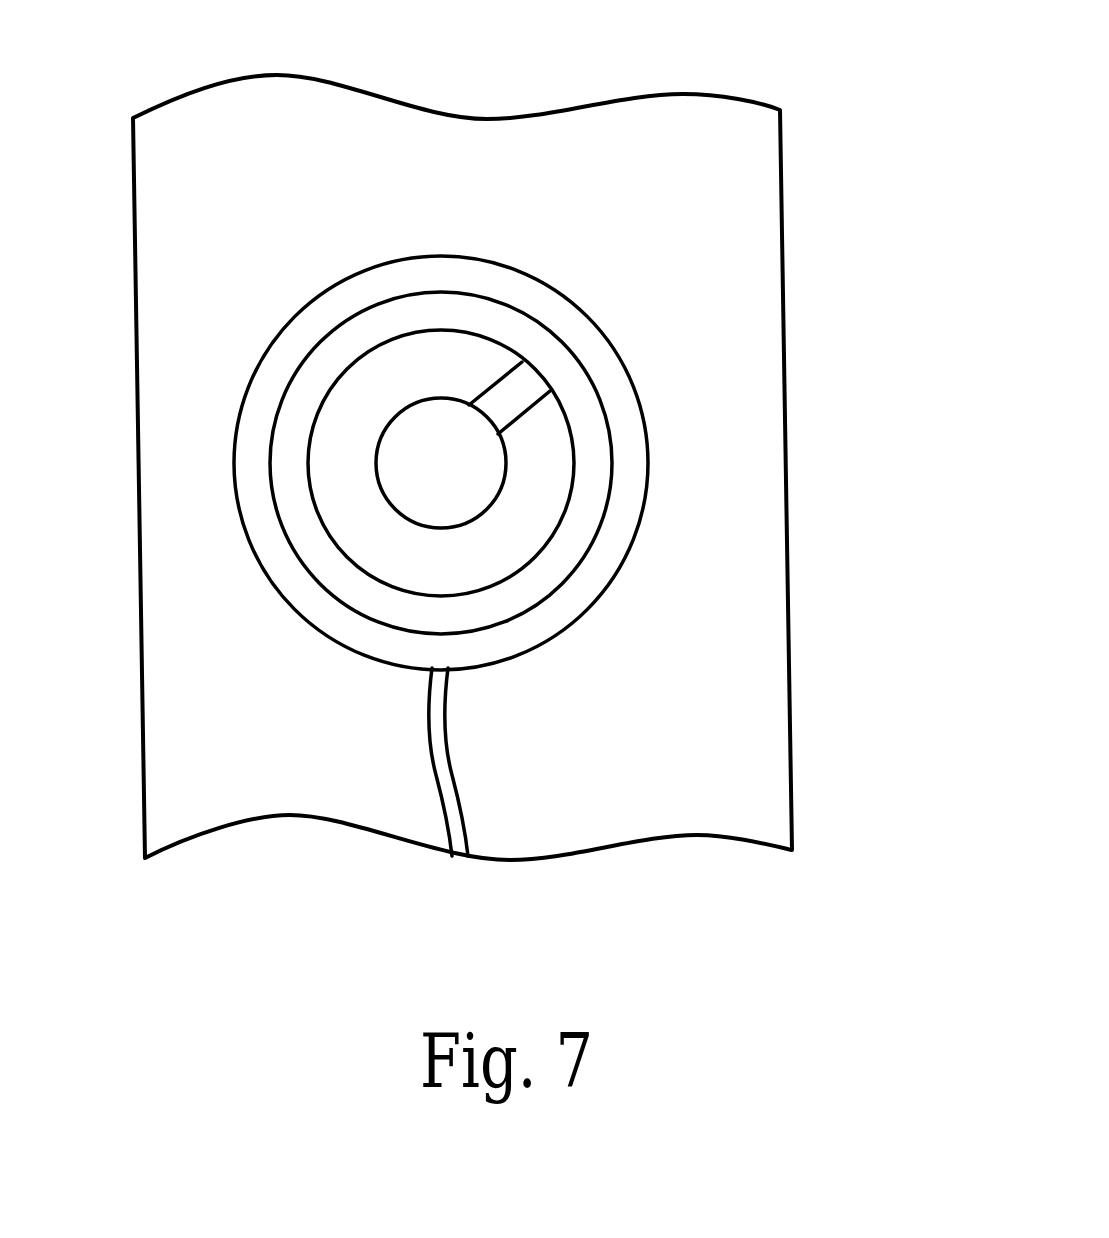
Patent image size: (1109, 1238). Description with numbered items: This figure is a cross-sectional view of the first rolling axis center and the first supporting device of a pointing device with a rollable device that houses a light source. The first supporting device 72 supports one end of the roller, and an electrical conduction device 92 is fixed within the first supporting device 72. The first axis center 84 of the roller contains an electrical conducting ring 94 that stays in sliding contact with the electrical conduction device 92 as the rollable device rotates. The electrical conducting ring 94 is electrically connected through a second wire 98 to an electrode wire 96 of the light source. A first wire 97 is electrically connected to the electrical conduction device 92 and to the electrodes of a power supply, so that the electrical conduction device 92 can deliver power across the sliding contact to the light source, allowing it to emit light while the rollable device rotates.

The first supporting device 72 is at (575, 138).
The first axis center 84 is at (620, 480).
The electrical conduction device 92 is at (316, 324).
The electrical conducting ring 94 is at (308, 393).
The electrode wire 96 is at (406, 472).
The second wire 98 is at (522, 388).
The first wire 97 is at (447, 768).